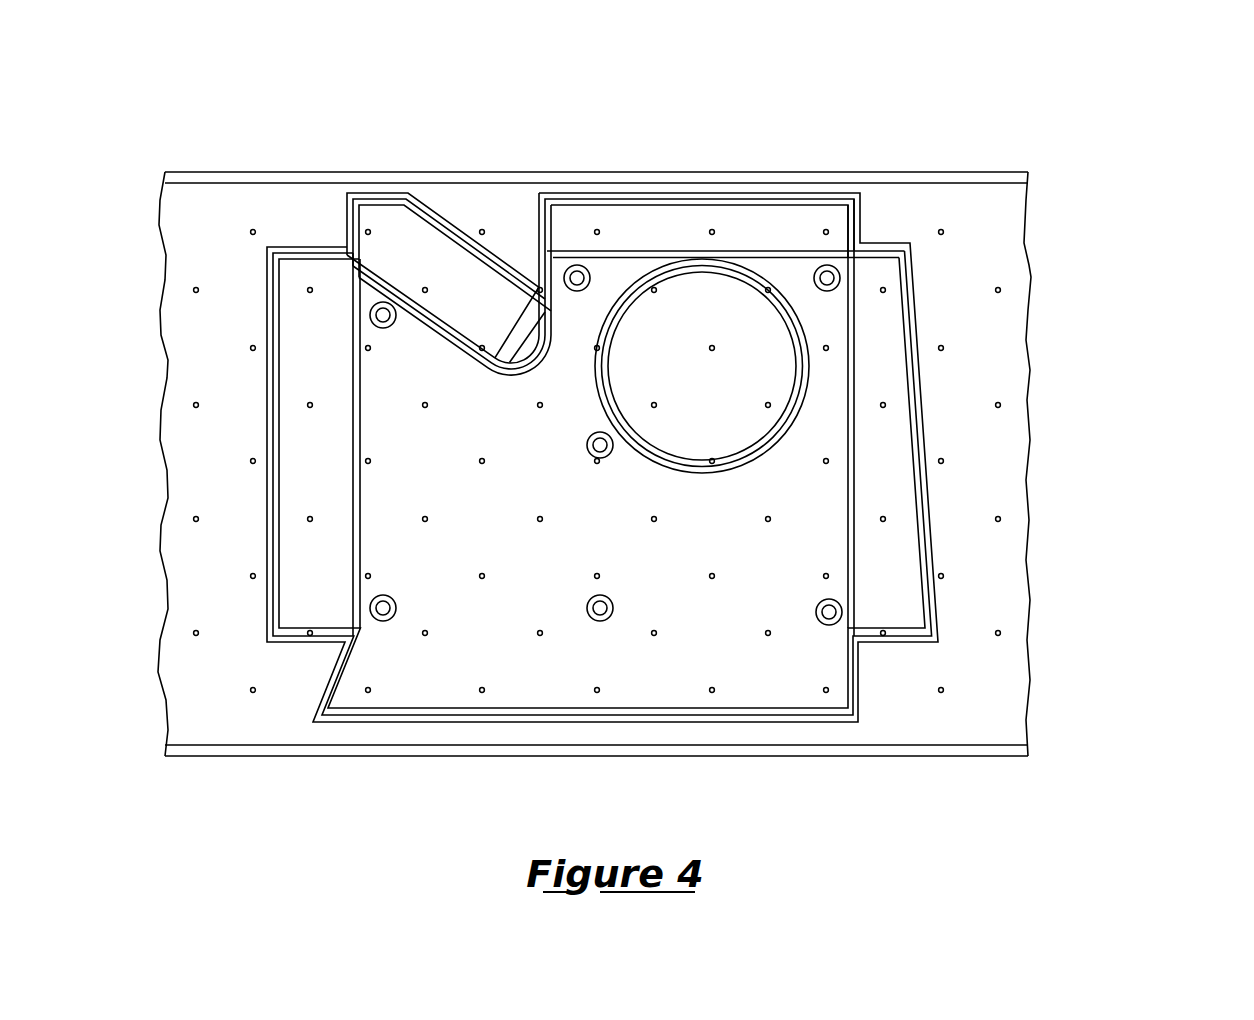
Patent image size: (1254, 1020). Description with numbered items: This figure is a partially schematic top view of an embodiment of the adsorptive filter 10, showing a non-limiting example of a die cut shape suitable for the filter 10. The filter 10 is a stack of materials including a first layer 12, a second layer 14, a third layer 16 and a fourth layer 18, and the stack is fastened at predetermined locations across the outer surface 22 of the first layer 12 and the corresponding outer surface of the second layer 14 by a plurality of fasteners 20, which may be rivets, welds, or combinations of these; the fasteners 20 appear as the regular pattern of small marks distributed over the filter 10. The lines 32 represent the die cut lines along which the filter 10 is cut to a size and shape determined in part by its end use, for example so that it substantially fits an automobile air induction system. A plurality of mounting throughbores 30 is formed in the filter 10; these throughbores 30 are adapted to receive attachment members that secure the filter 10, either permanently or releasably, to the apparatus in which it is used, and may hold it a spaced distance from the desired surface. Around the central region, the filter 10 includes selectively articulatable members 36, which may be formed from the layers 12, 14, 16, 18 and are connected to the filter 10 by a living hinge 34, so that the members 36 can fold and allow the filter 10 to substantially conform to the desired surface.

The adsorptive filter 10 is at (1070, 136).
The first layer 12 is at (706, 464).
The second layer 14 is at (706, 464).
The third layer 16 is at (706, 464).
The fourth layer 18 is at (1036, 310).
The fasteners 20 is at (597, 572).
The outer surface 22 is at (892, 548).
The mounting throughbores 30 is at (383, 621).
The die cut lines 32 is at (348, 243).
The living hinge 34 is at (639, 252).
The selectively articulatable members 36 is at (373, 243).